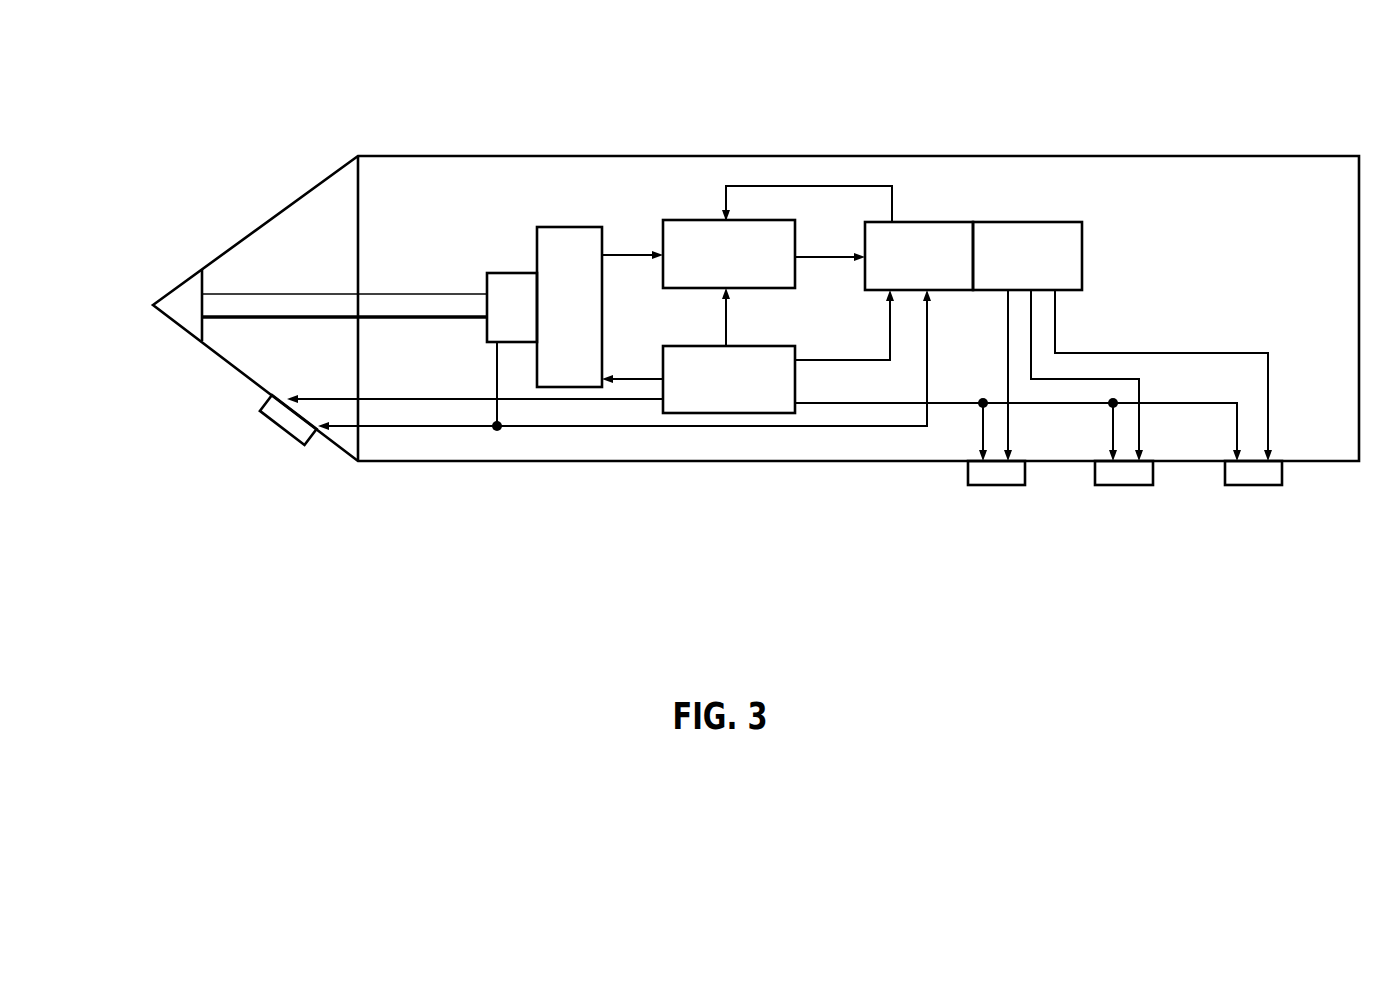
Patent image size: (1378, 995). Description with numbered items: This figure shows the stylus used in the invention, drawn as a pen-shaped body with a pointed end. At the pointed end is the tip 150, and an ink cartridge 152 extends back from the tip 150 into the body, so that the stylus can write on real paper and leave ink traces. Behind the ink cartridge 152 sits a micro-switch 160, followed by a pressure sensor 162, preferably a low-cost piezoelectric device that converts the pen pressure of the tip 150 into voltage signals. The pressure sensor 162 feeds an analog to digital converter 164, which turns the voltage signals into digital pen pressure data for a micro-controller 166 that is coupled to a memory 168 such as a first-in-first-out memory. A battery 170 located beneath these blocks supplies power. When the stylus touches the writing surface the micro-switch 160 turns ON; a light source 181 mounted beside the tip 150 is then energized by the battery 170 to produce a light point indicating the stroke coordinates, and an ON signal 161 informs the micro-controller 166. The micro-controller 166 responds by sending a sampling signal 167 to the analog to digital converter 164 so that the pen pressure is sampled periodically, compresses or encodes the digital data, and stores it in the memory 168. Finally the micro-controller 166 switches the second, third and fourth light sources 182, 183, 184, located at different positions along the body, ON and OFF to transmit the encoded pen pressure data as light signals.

The tip 150 is at (182, 283).
The ink cartridge 152 is at (318, 293).
The micro-switch 160 is at (497, 273).
The pressure sensor 162 is at (573, 227).
The analog to digital converter 164 is at (702, 220).
The sampling signal 167 is at (843, 186).
The micro-controller 166 is at (946, 222).
The memory 168 is at (1053, 222).
The battery 170 is at (688, 413).
The ON signal 161 is at (793, 428).
The light source 181 is at (282, 434).
The light source 182 is at (1003, 485).
The light source 183 is at (1117, 485).
The light source 184 is at (1245, 485).